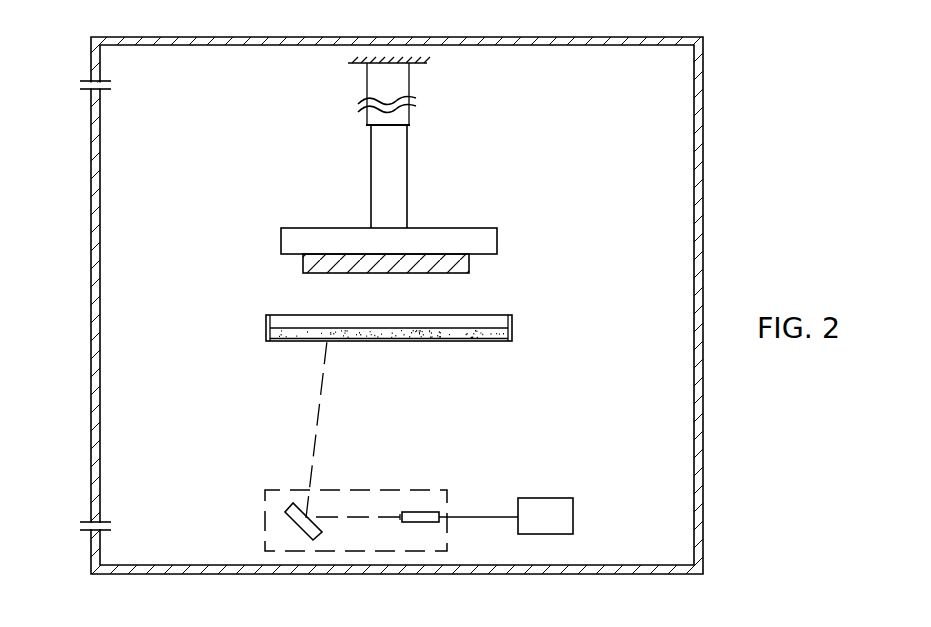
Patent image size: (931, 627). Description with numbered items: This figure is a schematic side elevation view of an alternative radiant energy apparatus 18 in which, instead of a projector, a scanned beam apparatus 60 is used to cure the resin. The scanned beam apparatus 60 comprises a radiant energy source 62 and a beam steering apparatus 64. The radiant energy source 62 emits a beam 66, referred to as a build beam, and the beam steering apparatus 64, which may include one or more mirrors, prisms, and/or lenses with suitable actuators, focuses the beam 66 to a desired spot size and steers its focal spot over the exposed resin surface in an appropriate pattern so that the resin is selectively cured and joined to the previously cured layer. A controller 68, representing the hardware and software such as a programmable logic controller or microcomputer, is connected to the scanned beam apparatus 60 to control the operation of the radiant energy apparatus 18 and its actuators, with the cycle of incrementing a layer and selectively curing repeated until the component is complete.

The radiant energy apparatus 18 is at (191, 505).
The scanned beam apparatus 60 is at (265, 542).
The radiant energy source 62 is at (428, 512).
The beam steering apparatus 64 is at (296, 502).
The beam 66 is at (316, 452).
The controller 68 is at (559, 528).